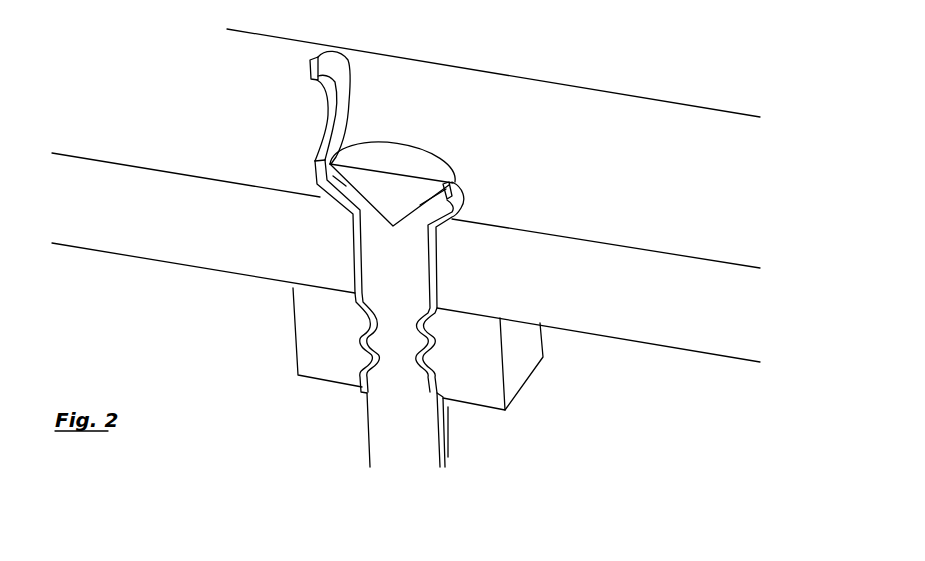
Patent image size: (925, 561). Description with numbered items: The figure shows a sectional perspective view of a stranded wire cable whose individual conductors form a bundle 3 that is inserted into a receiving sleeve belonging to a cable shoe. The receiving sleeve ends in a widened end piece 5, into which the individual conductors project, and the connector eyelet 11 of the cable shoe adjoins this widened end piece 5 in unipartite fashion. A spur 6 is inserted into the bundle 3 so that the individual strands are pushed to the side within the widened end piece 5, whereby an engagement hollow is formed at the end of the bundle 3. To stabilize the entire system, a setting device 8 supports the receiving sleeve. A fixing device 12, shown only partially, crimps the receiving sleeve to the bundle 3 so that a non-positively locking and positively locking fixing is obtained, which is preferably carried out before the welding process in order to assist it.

The bundle 3 is at (363, 411).
The widened end piece 5 is at (453, 222).
The spur 6 is at (412, 153).
The setting device 8 is at (553, 135).
The connector eyelet 11 is at (312, 68).
The fixing device 12 is at (312, 302).